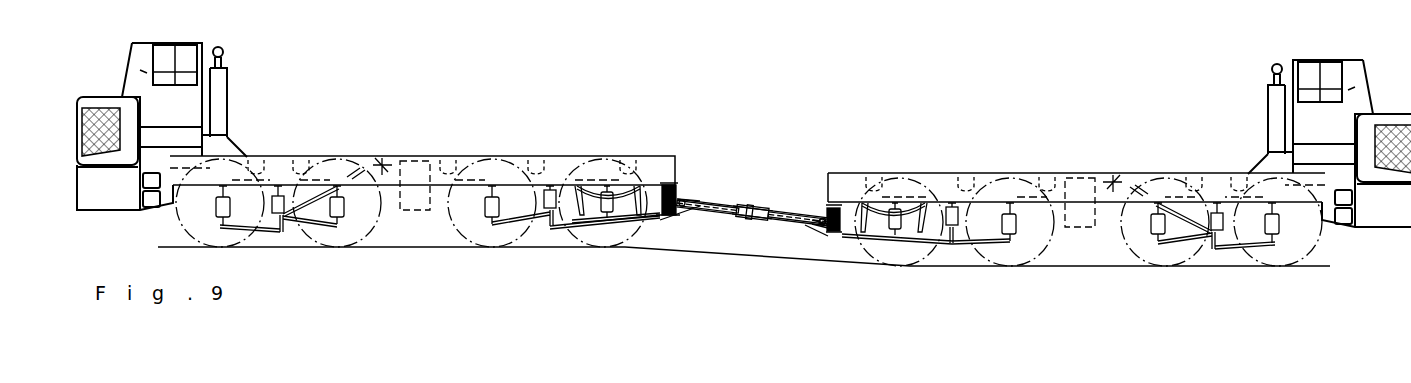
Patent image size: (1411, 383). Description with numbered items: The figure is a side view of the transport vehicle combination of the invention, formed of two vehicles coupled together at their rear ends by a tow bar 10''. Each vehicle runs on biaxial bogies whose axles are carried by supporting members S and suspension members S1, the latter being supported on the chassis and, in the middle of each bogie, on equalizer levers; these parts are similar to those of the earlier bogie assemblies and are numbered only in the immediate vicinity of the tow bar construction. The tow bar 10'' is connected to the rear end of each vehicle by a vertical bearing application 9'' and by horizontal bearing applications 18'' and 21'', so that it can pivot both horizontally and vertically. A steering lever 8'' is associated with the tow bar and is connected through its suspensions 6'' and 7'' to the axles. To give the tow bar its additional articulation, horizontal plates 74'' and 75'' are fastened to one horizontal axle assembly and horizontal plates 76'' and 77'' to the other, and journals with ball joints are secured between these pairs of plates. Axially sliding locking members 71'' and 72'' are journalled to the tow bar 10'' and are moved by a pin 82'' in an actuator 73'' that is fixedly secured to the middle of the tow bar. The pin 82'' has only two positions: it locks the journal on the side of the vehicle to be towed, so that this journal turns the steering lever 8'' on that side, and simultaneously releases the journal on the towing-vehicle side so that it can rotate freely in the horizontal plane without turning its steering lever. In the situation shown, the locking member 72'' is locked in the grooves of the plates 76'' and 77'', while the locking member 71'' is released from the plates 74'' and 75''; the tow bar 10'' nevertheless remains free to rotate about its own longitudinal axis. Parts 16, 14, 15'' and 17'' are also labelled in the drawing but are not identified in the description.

The vertical bearing application 9'' is at (646, 156).
The supporting member S is at (630, 195).
The suspension member S1 is at (552, 226).
The horizontal bearing application 21'' is at (765, 169).
The axially sliding locking member 71'' is at (759, 162).
The pin 82'' is at (774, 161).
The horizontal plate 76'' is at (847, 169).
The horizontal plate 74'' is at (711, 181).
The actuator 73'' is at (750, 185).
The axially sliding locking member 72'' is at (802, 187).
The tow bar 10'' is at (753, 209).
The horizontal bearing application 18'' is at (802, 238).
The bogie cylinder 16 is at (600, 218).
The suspension of steering lever 7'' is at (616, 252).
The front pivot pin 17'' is at (675, 246).
The horizontal plate 75'' is at (710, 245).
The steering lever 8'' is at (744, 261).
The rear pivot pin 15'' is at (826, 254).
The horizontal plate 77'' is at (778, 267).
The suspension of steering lever 6'' is at (926, 246).
The rear bogie cylinder 14 is at (897, 238).